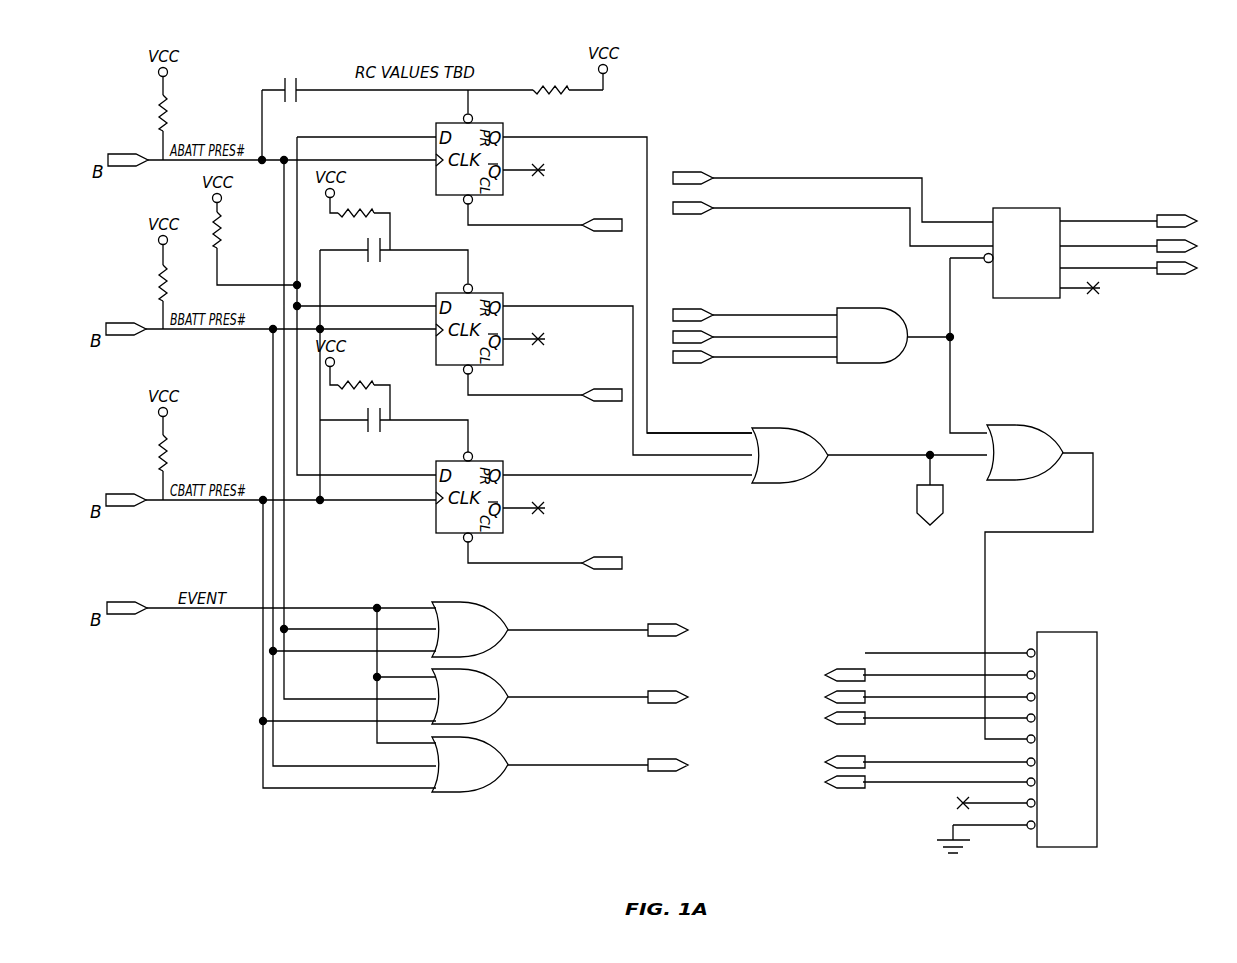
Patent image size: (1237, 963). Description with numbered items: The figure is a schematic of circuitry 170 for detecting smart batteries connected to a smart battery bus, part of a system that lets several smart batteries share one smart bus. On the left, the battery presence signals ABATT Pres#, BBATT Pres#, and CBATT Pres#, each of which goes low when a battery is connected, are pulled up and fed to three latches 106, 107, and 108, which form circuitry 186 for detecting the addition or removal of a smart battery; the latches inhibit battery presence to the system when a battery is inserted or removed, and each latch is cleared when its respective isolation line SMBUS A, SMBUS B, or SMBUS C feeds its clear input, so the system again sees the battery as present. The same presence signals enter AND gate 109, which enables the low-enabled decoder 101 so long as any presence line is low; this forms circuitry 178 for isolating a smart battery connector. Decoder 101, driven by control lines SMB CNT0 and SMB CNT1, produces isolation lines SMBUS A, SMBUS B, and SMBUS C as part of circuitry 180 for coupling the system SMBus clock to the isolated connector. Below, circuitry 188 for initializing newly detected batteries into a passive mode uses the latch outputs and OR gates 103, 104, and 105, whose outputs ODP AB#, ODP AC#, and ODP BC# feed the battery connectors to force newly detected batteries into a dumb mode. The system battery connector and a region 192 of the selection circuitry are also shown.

The decoder 101 is at (1052, 311).
The OR gate 103 is at (557, 623).
The OR gate 104 is at (557, 692).
The OR gate 105 is at (557, 759).
The latch 106 is at (582, 261).
The latch 107 is at (582, 363).
The latch 108 is at (582, 514).
The AND gate 109 is at (811, 324).
The circuitry for detecting smart batteries connected to a smart battery bus 170 is at (763, 792).
The circuitry for isolating a smart battery connector 178 is at (1063, 350).
The circuitry for coupling an SMBus clock signal to the isolated smart battery conne 180 is at (972, 142).
The circuitry for detecting the addition or removal of a smart battery 186 is at (697, 538).
The circuitry for initializing newly detected batteries into a passive mode 188 is at (673, 410).
The SMBus output select 192 is at (1063, 93).